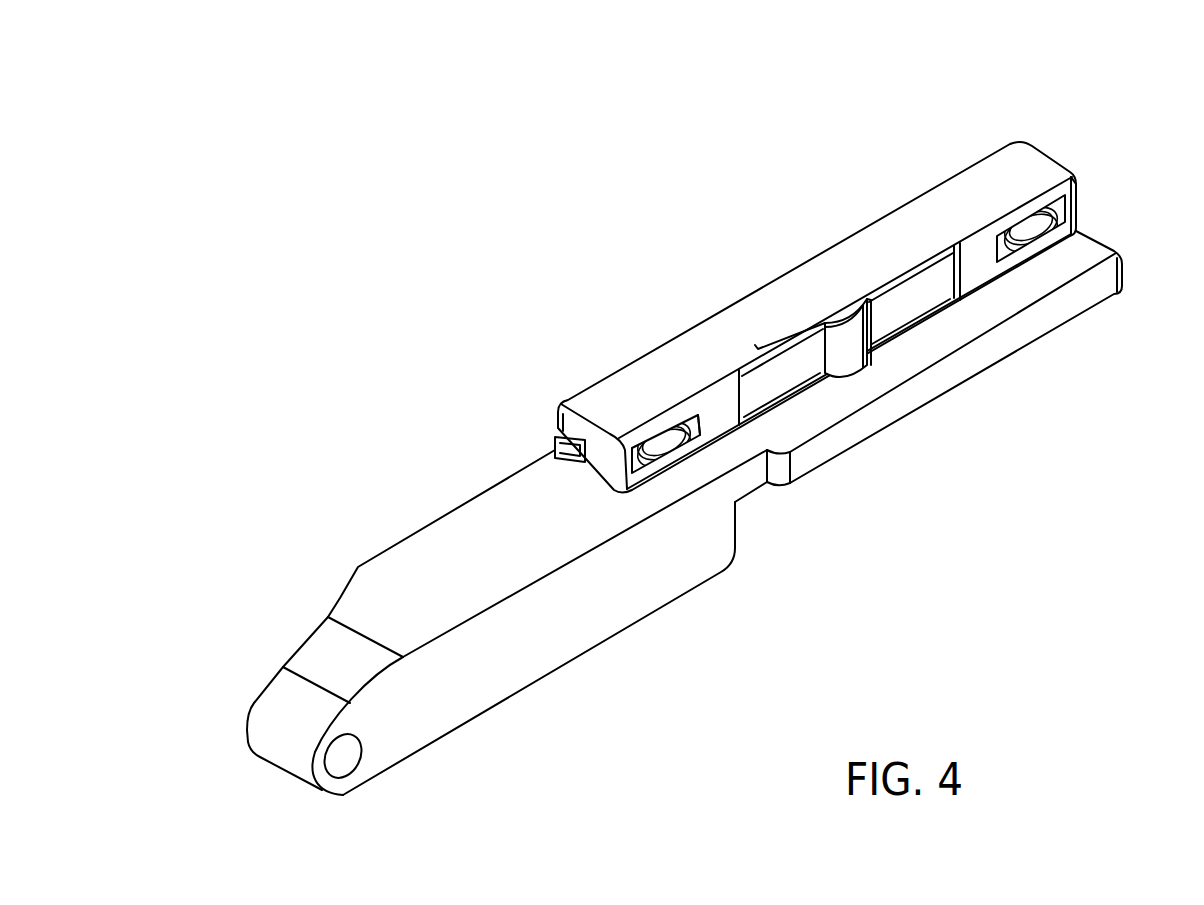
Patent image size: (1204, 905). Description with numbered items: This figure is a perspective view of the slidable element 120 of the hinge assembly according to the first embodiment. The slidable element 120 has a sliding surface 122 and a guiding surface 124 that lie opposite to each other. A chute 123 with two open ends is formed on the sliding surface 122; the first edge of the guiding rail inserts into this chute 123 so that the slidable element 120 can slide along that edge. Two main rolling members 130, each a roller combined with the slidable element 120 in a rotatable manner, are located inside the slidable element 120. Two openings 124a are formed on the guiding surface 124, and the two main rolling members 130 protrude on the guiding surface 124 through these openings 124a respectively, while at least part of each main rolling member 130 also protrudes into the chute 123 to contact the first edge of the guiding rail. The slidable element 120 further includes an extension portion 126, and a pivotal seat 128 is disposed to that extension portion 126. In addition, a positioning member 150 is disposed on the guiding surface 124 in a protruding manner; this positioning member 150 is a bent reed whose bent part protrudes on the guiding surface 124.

The slidable element 120 is at (641, 288).
The sliding surface 122 is at (588, 370).
The chute 123 is at (577, 447).
The guiding surface 124 is at (985, 284).
The opening 124a is at (698, 416).
The extension portion 126 is at (427, 567).
The pivotal seat 128 is at (288, 731).
The main rolling member 130 is at (679, 451).
The positioning member 150 is at (855, 350).